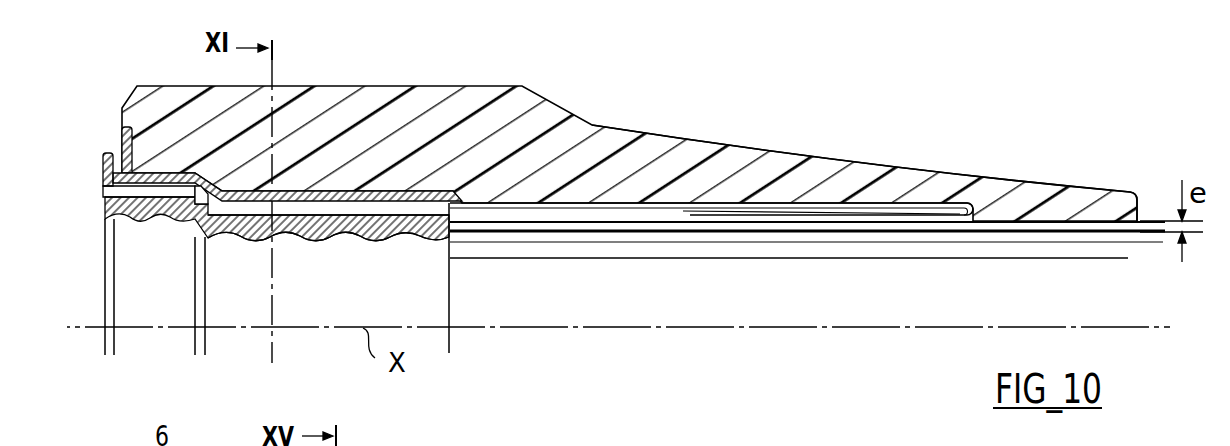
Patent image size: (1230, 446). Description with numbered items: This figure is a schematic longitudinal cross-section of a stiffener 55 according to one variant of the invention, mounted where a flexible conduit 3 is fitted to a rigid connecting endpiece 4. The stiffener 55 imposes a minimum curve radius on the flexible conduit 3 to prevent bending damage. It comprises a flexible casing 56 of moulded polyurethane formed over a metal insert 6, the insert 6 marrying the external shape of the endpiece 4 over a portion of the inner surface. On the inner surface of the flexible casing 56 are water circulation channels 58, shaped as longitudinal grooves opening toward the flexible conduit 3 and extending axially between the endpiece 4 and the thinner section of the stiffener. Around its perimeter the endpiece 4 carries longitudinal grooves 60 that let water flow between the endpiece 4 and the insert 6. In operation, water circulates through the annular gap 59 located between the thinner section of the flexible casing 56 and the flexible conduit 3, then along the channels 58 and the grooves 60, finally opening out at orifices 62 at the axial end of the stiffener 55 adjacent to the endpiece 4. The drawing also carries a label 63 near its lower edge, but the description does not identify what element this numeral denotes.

The flexible conduit 3 is at (768, 275).
The endpiece 4 is at (138, 272).
The insert 6 is at (300, 202).
The stiffener 55 is at (343, 114).
The flexible casing 56 is at (573, 140).
The water circulation channels 58 is at (868, 214).
The annular gap 59 is at (1028, 226).
The longitudinal grooves 60 is at (398, 216).
The orifices 62 is at (103, 190).
The element 63 is at (445, 445).